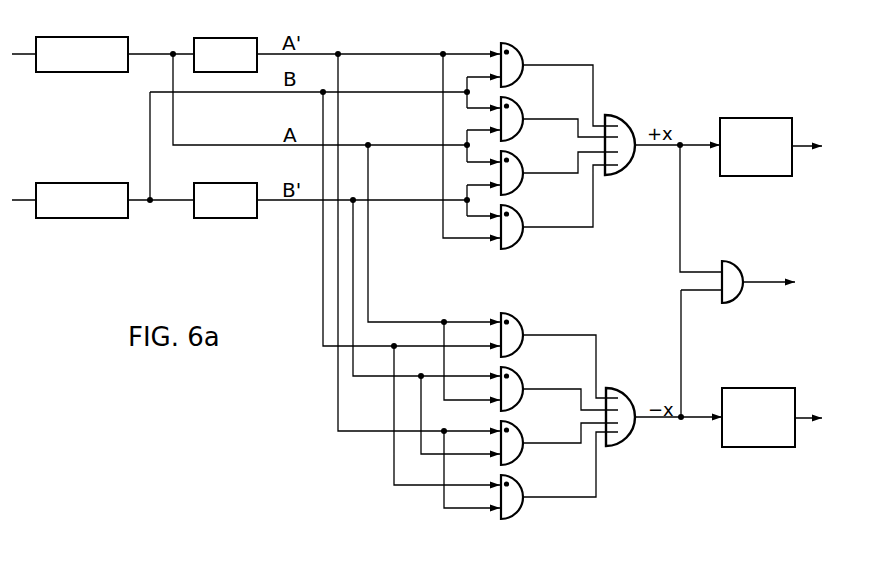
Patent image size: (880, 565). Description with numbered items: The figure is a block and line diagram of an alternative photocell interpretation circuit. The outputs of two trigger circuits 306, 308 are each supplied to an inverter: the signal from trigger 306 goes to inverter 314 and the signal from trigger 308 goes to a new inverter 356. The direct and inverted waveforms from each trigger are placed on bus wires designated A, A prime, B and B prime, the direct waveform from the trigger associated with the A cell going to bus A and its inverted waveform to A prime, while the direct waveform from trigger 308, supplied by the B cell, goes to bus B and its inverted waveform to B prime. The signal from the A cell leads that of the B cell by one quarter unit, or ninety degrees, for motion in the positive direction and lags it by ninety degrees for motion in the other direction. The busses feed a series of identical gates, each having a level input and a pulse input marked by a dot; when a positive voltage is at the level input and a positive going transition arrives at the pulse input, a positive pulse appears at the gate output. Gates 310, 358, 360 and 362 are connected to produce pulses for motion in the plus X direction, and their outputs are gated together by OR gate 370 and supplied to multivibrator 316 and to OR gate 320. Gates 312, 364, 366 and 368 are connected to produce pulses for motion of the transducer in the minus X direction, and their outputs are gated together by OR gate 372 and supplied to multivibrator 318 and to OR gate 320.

The trigger circuit 306 is at (57, 37).
The trigger circuit 308 is at (50, 183).
The inverter 314 is at (200, 38).
The inverter 356 is at (200, 183).
The gate 310 is at (519, 57).
The gate 360 is at (519, 111).
The gate 358 is at (519, 165).
The gate 362 is at (519, 219).
The gate 312 is at (519, 327).
The gate 366 is at (519, 381).
The gate 364 is at (519, 435).
The gate 368 is at (519, 489).
The OR gate 370 is at (617, 175).
The OR gate 372 is at (618, 445).
The OR gate 320 is at (735, 300).
The multivibrator 316 is at (728, 118).
The multivibrator 318 is at (729, 388).